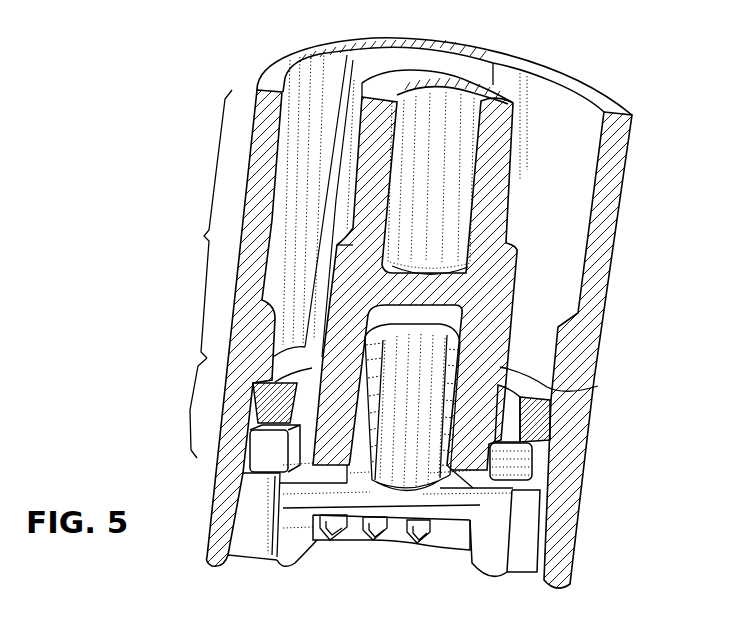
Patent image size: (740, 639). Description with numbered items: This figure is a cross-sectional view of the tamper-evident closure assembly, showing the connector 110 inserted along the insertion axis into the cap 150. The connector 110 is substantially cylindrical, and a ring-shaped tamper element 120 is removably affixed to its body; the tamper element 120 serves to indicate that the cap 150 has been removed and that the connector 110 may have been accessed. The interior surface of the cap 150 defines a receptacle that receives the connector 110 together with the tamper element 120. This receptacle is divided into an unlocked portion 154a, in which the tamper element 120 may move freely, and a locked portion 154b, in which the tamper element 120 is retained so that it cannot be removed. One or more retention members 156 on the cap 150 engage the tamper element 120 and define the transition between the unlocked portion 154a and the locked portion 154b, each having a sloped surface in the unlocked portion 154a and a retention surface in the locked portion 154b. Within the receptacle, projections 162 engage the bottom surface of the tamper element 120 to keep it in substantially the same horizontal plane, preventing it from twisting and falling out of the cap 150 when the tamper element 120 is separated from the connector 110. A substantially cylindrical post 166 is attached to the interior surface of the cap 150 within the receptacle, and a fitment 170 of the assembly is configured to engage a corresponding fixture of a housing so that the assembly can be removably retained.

The connector 110 is at (505, 130).
The cap 150 is at (604, 226).
The unlocked portion 154a is at (189, 224).
The locked portion 154b is at (216, 415).
The retention member 156 is at (597, 386).
The tamper element 120 is at (543, 420).
The projection 162 is at (535, 465).
The post 166 is at (372, 465).
The fitment 170 is at (296, 577).